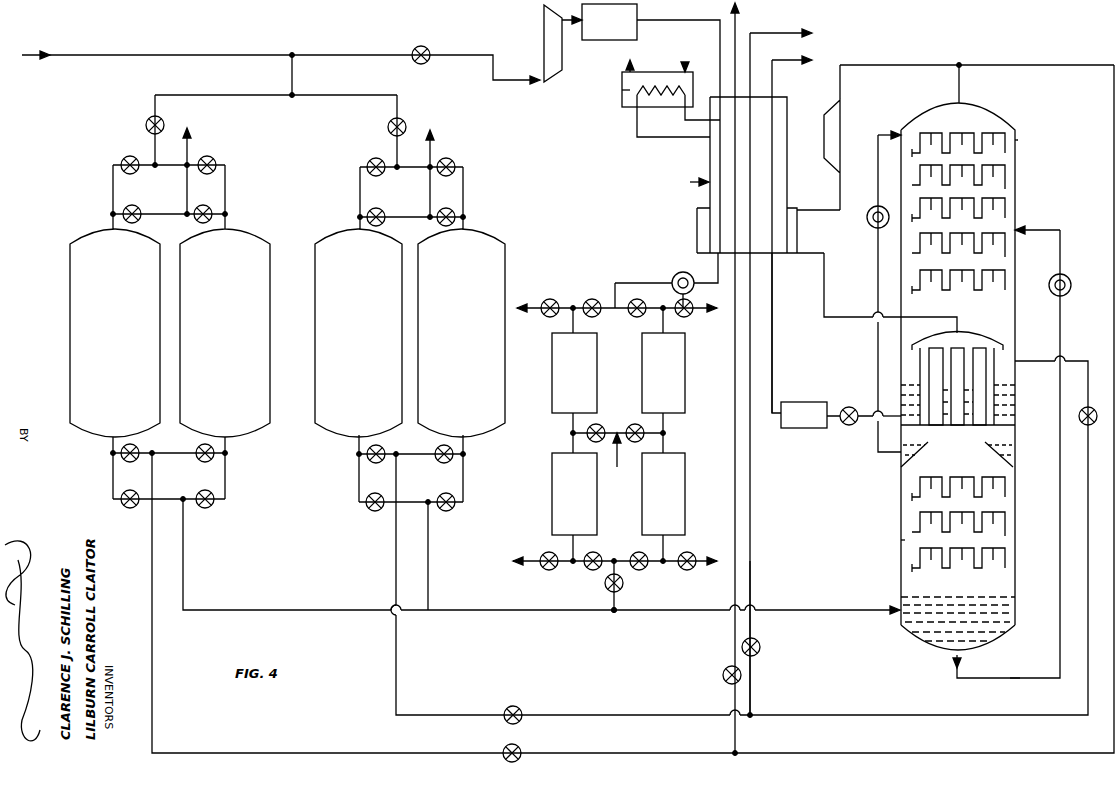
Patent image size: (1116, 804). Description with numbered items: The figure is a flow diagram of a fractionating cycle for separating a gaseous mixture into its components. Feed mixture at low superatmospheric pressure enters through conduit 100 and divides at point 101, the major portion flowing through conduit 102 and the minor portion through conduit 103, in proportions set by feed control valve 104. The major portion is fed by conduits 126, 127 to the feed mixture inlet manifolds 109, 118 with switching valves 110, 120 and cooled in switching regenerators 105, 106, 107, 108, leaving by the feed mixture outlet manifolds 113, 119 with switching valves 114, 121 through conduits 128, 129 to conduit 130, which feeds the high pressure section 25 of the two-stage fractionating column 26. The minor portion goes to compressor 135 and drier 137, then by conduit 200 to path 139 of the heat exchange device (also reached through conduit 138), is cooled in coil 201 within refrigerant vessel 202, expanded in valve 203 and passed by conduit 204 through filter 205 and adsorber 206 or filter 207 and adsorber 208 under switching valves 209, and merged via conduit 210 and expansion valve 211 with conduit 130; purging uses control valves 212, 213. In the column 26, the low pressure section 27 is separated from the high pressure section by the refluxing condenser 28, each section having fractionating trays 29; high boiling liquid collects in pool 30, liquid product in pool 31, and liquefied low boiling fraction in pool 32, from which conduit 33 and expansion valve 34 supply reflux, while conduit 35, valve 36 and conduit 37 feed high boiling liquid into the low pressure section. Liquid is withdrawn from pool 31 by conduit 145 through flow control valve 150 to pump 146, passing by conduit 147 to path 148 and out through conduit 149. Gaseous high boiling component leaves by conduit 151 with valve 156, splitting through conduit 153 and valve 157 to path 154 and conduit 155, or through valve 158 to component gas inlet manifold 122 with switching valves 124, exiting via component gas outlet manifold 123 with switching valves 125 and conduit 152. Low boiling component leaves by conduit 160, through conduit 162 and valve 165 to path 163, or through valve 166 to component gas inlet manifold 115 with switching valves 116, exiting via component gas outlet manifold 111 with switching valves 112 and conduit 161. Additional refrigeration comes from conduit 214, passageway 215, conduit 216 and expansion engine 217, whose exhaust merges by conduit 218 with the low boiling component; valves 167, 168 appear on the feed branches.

The conduit 100 is at (142, 55).
The point 101 is at (292, 55).
The conduit 102 is at (292, 95).
The conduit 103 is at (475, 55).
The feed control valve 104 is at (418, 48).
The switching regenerator 105 is at (70, 313).
The switching regenerator 106 is at (270, 313).
The switching regenerator 107 is at (315, 358).
The switching regenerator 108 is at (505, 375).
The feed mixture inlet manifold 109 is at (168, 165).
The switching valve 110 is at (123, 158).
The component gas outlet manifold 111 is at (162, 214).
The switching valve 112 is at (132, 205).
The feed mixture outlet manifold 113 is at (172, 499).
The switching valve 114 is at (130, 508).
The component gas inlet manifold 115 is at (167, 453).
The switching valve 116 is at (130, 462).
The feed mixture inlet manifold 118 is at (407, 167).
The feed mixture outlet manifold 119 is at (412, 502).
The switching valve 120 is at (370, 160).
The switching valve 121 is at (375, 511).
The component gas inlet manifold 122 is at (409, 454).
The component gas outlet manifold 123 is at (407, 217).
The switching valve 124 is at (376, 463).
The switching valve 125 is at (376, 208).
The conduit 126 is at (199, 95).
The conduit 127 is at (360, 95).
The conduit 128 is at (183, 560).
The conduit 129 is at (428, 560).
The conduit 130 is at (814, 610).
The compressor 135 is at (544, 38).
The drier 137 is at (600, 40).
The conduit 138 is at (720, 200).
The path 139 is at (684, 180).
The conduit 145 is at (878, 410).
The pump 146 is at (804, 402).
The conduit 147 is at (772, 350).
The path 148 is at (773, 117).
The conduit 149 is at (787, 64).
The flow control valve 150 is at (849, 425).
The conduit 151 is at (396, 560).
The conduit 152 is at (433, 150).
The conduit 153 is at (750, 495).
The path 154 is at (753, 147).
The conduit 155 is at (775, 33).
The flow control valve 156 is at (1091, 407).
The flow control valve 157 is at (760, 647).
The flow control valve 158 is at (513, 706).
The conduit 160 is at (152, 690).
The conduit 161 is at (190, 147).
The conduit 162 is at (735, 395).
The path 163 is at (733, 163).
The flow control valve 165 is at (723, 675).
The flow control valve 166 is at (518, 748).
The valve 167 is at (147, 120).
The valve 168 is at (389, 120).
The conduit 200 is at (677, 20).
The coil 201 is at (655, 75).
The vessel 202 is at (622, 90).
The valve 203 is at (686, 272).
The conduit 204 is at (635, 283).
The filter 205 is at (555, 343).
The adsorber 206 is at (552, 494).
The filter 207 is at (685, 358).
The adsorber 208 is at (685, 494).
The switching valve 209 is at (592, 299).
The conduit 210 is at (612, 608).
The expansion valve 211 is at (610, 456).
The control valve 212 is at (632, 425).
The control valve 213 is at (547, 299).
The conduit 214 is at (843, 317).
The passageway 215 is at (790, 228).
The conduit 216 is at (824, 205).
The expansion engine 217 is at (838, 118).
The conduit 218 is at (910, 65).
The high pressure section 25 is at (901, 545).
The two-stage fractionating column 26 is at (1018, 192).
The low pressure section 27 is at (1018, 145).
The refluxing condenser 28 is at (977, 335).
The fractionating trays 29 is at (1005, 288).
The pool 30 is at (1006, 615).
The pool 31 is at (1006, 412).
The pool 32 is at (1008, 456).
The conduit 33 is at (878, 372).
The expansion valve 34 is at (868, 212).
The conduit 35 is at (1015, 678).
The valve 36 is at (1071, 285).
The conduit 37 is at (1044, 230).